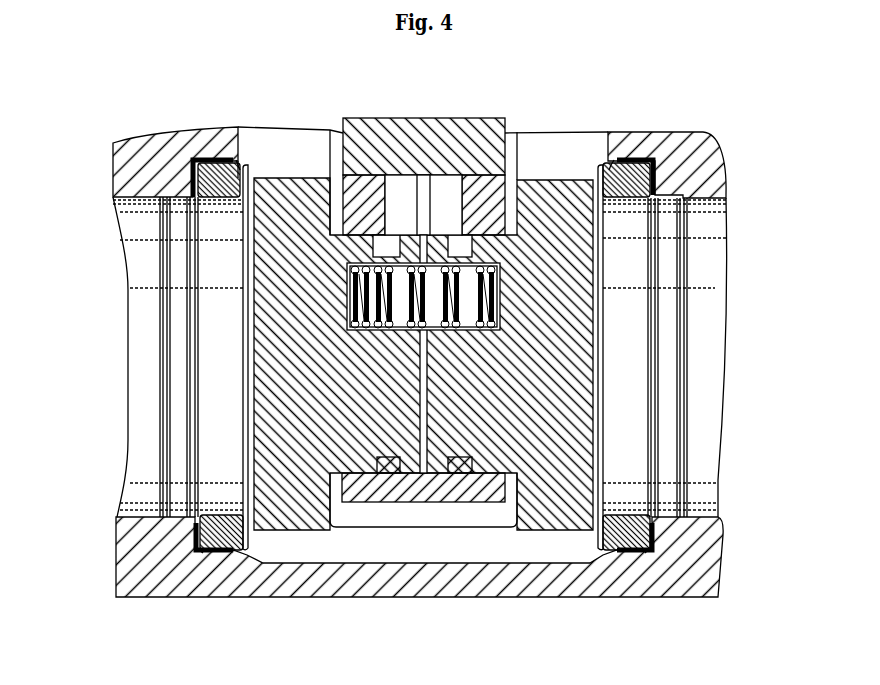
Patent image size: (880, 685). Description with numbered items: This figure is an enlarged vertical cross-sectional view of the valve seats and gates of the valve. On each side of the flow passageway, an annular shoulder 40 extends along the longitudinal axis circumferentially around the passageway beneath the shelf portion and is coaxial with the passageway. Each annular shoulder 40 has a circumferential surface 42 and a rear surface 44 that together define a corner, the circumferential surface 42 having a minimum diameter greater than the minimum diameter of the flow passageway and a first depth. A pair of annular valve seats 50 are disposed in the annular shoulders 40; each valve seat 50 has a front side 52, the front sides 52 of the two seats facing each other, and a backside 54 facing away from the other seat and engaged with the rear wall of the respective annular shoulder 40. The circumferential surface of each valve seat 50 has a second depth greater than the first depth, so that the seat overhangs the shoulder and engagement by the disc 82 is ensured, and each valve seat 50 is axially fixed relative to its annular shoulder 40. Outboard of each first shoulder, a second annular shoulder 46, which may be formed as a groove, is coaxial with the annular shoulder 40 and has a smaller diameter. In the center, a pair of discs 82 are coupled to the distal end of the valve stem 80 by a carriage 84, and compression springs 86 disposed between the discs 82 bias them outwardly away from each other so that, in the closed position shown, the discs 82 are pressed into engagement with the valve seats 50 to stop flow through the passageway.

The annular shoulder 40 is at (214, 158).
The circumferential surface 42 is at (226, 160).
The rear surface 44 is at (193, 178).
The second annular shoulder 46 is at (178, 469).
The annular valve seat 50 is at (216, 544).
The front side 52 is at (210, 312).
The backside 54 is at (192, 360).
The valve stem 80 is at (432, 118).
The disc 82 is at (568, 520).
The carriage 84 is at (508, 180).
The compression spring 86 is at (430, 345).